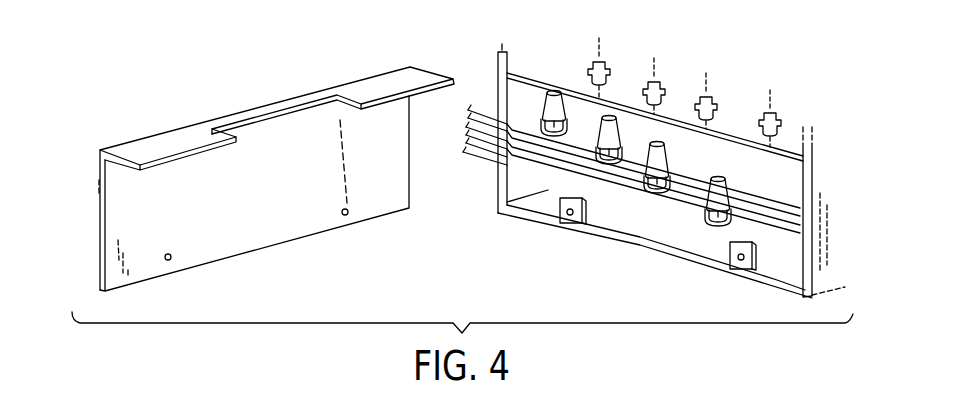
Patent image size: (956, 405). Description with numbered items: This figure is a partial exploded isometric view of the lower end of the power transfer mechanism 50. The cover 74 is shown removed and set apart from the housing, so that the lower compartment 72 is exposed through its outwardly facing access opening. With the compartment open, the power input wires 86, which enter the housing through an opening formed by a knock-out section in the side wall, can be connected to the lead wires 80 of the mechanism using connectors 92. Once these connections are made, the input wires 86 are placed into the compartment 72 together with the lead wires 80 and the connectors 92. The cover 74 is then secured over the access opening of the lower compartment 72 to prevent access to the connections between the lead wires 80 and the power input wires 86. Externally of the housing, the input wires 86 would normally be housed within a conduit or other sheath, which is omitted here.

The power transfer mechanism 50 is at (476, 41).
The lower compartment 72 is at (797, 187).
The cover 74 is at (94, 232).
The lead wires 80 is at (577, 97).
The power input wires 86 is at (474, 142).
The connectors 92 is at (541, 91).